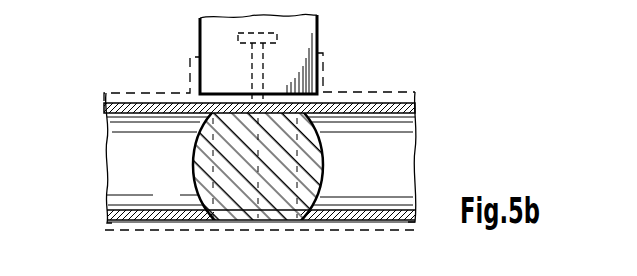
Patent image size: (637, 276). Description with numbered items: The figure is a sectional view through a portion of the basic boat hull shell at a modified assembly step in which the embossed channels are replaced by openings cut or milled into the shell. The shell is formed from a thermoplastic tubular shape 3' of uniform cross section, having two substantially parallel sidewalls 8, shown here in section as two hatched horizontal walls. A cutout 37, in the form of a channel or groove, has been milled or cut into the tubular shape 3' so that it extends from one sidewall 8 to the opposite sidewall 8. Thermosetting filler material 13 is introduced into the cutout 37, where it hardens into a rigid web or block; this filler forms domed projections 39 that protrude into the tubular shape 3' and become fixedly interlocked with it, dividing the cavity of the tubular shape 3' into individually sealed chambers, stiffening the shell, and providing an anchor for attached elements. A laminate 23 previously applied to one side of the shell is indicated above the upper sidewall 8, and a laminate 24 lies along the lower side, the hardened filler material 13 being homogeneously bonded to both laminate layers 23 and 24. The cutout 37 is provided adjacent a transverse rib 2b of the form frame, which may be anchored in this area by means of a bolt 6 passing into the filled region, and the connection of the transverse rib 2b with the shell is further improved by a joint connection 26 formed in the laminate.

The transverse rib 2b is at (305, 34).
The bolt 6 is at (238, 36).
The sidewall 8 is at (155, 103).
The thermosetting filler material 13 is at (273, 200).
The laminate 23 is at (397, 95).
The laminate 24 is at (327, 223).
The joint connection 26 is at (323, 62).
The cutout 37 is at (213, 160).
The domed projection 39 is at (323, 174).
The tubular shape 3' is at (244, 161).